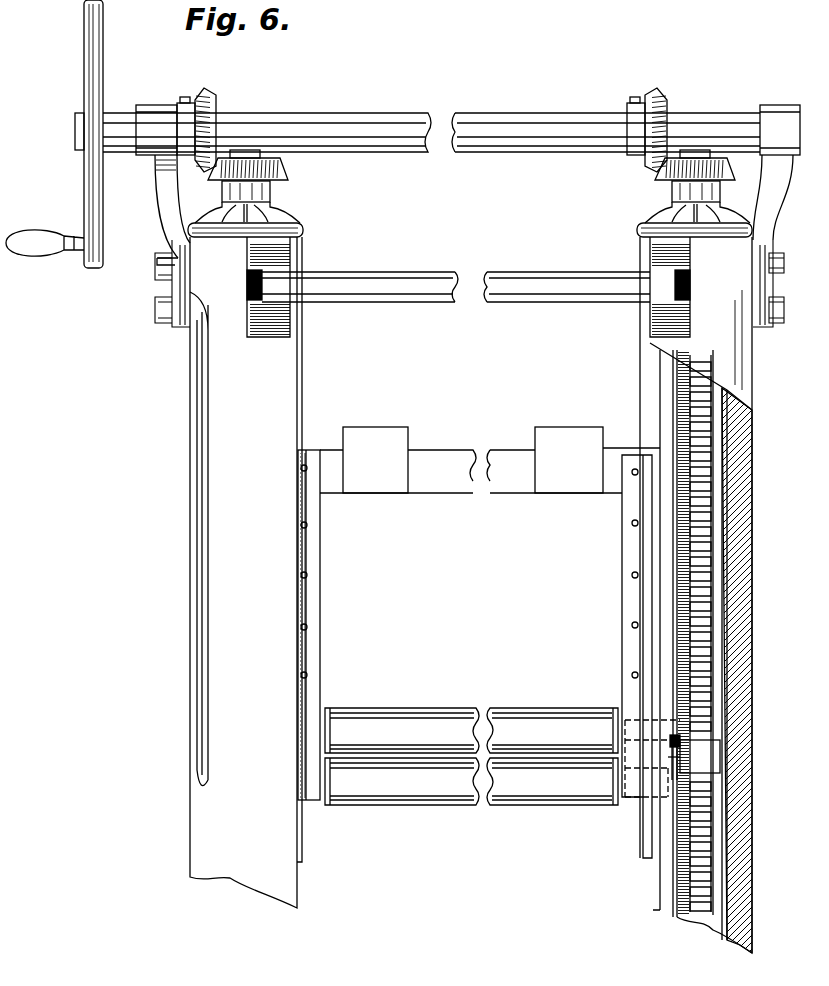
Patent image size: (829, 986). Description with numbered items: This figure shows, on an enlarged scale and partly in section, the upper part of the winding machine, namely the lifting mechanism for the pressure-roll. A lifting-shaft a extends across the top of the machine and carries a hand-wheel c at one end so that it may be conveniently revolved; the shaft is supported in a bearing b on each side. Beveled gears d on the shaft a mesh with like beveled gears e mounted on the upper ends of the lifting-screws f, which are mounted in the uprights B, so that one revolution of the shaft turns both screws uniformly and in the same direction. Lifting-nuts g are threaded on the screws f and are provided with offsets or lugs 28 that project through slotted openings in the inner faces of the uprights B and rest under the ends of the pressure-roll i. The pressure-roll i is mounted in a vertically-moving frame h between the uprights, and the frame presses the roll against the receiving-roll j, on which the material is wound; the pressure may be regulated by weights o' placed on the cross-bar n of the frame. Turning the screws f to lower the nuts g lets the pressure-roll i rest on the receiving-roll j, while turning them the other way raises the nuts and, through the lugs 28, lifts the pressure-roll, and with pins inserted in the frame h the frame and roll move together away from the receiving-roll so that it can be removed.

The lifting-shaft a is at (431, 132).
The bearing b is at (150, 114).
The hand-wheel c is at (99, 80).
The beveled gears d is at (212, 104).
The beveled gears e is at (284, 172).
The uprights B is at (470, 567).
The lifting-screws f is at (730, 500).
The lifting-nuts g is at (672, 758).
The frame h is at (475, 654).
The pressure-roll i is at (471, 730).
The receiving-roll j is at (471, 781).
The cross-bar n is at (490, 470).
The weights o' is at (473, 447).
The offsets or lugs 28 is at (668, 757).